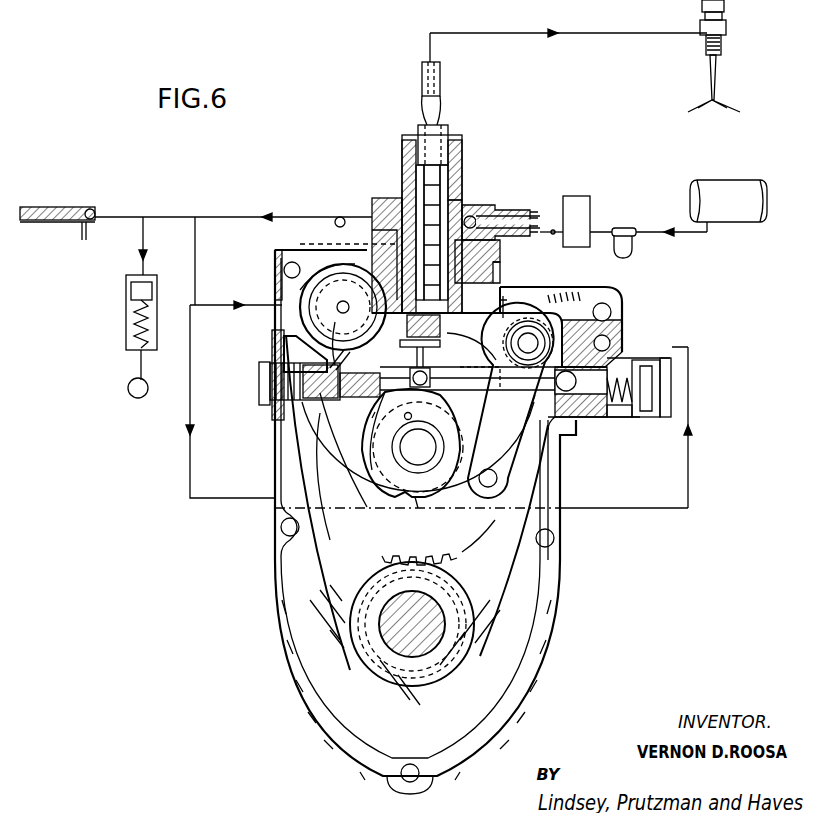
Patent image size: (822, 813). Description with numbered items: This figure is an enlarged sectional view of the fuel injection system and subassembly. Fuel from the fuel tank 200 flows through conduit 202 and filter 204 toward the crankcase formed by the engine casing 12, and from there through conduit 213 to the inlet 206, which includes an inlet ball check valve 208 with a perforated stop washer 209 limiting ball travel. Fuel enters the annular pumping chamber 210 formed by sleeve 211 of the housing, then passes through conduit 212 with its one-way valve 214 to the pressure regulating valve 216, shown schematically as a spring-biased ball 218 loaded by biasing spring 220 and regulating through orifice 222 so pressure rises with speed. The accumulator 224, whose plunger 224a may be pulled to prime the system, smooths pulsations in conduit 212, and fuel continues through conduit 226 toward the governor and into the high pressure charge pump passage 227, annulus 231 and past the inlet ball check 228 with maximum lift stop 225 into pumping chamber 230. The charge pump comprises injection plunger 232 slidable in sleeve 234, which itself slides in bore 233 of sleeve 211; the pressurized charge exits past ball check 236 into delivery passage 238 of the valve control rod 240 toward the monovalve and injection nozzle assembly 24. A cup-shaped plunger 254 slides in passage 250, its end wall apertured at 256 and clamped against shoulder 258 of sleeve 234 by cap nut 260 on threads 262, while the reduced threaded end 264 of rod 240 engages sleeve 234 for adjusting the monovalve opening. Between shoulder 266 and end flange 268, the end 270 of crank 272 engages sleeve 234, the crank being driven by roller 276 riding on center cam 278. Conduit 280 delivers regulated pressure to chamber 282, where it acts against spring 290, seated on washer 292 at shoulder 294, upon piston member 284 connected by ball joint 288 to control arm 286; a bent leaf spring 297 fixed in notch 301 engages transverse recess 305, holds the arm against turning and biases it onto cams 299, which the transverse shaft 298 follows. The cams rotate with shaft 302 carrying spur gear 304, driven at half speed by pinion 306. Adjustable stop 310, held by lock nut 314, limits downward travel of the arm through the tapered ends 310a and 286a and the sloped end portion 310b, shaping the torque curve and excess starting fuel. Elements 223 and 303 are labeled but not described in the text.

The engine casing 12 is at (583, 205).
The monovalve and injection nozzle assembly 24 is at (726, 32).
The fuel tank 200 is at (729, 211).
The conduit 202 is at (692, 236).
The filter 204 is at (627, 228).
The inlet 206 is at (551, 232).
The inlet ball check valve 208 is at (525, 218).
The perforated stop washer 209 is at (458, 238).
The annular pumping chamber 210 is at (390, 225).
The sleeve 211 is at (395, 250).
The conduit 212 is at (210, 216).
The conduit 213 is at (556, 230).
The one-way valve 214 is at (338, 218).
The pressure regulating valve 216 is at (58, 224).
The spring-biased ball 218 is at (92, 208).
The biasing spring 220 is at (72, 205).
The orifice 222 is at (84, 225).
The housing cover plate 223 is at (500, 310).
The accumulator 224 is at (134, 284).
The plunger 224a is at (138, 362).
The maximum lift stop 225 is at (395, 250).
The conduit 226 is at (208, 304).
The high pressure charge pump passage 227 is at (300, 244).
The inlet ball check 228 is at (335, 318).
The pumping chamber 230 is at (482, 276).
The annulus 231 is at (508, 302).
The injection plunger 232 is at (258, 372).
The bore 233 is at (343, 307).
The sleeve 234 is at (355, 266).
The ball check 236 is at (496, 262).
The delivery passage 238 is at (420, 98).
The valve control rod 240 is at (430, 58).
The passage 250 is at (400, 215).
The cup-shaped plunger 254 is at (408, 185).
The aperture 256 is at (446, 160).
The shoulder 258 is at (455, 200).
The cap nut 260 is at (416, 165).
The threads 262 is at (442, 125).
The threaded end portion 264 is at (460, 215).
The shoulder 266 is at (322, 316).
The end flange 268 is at (285, 348).
The crank end 270 is at (505, 324).
The crank 272 is at (548, 428).
The roller 276 is at (465, 548).
The center cam 278 is at (385, 498).
The conduit 280 is at (182, 463).
The chamber 282 is at (640, 378).
The piston member 284 is at (620, 417).
The control arm 286 is at (458, 366).
The tapered end 286a is at (268, 398).
The ball joint connection 288 is at (605, 417).
The spring 290 is at (662, 392).
The washer 292 is at (622, 372).
The shoulder 294 is at (660, 417).
The bent leaf spring 297 is at (466, 352).
The transverse shaft 298 is at (450, 390).
The cams 299 is at (422, 500).
The notch 301 is at (512, 308).
The shaft 302 is at (405, 458).
The lever edge 303 is at (535, 432).
The spur gear 304 is at (404, 556).
The transverse recess 305 is at (500, 400).
The drive pinion 306 is at (388, 660).
The adjustable stop 310 is at (345, 420).
The tapered ends 310a is at (375, 412).
The end portion 310b is at (372, 470).
The lock nut 314 is at (320, 413).